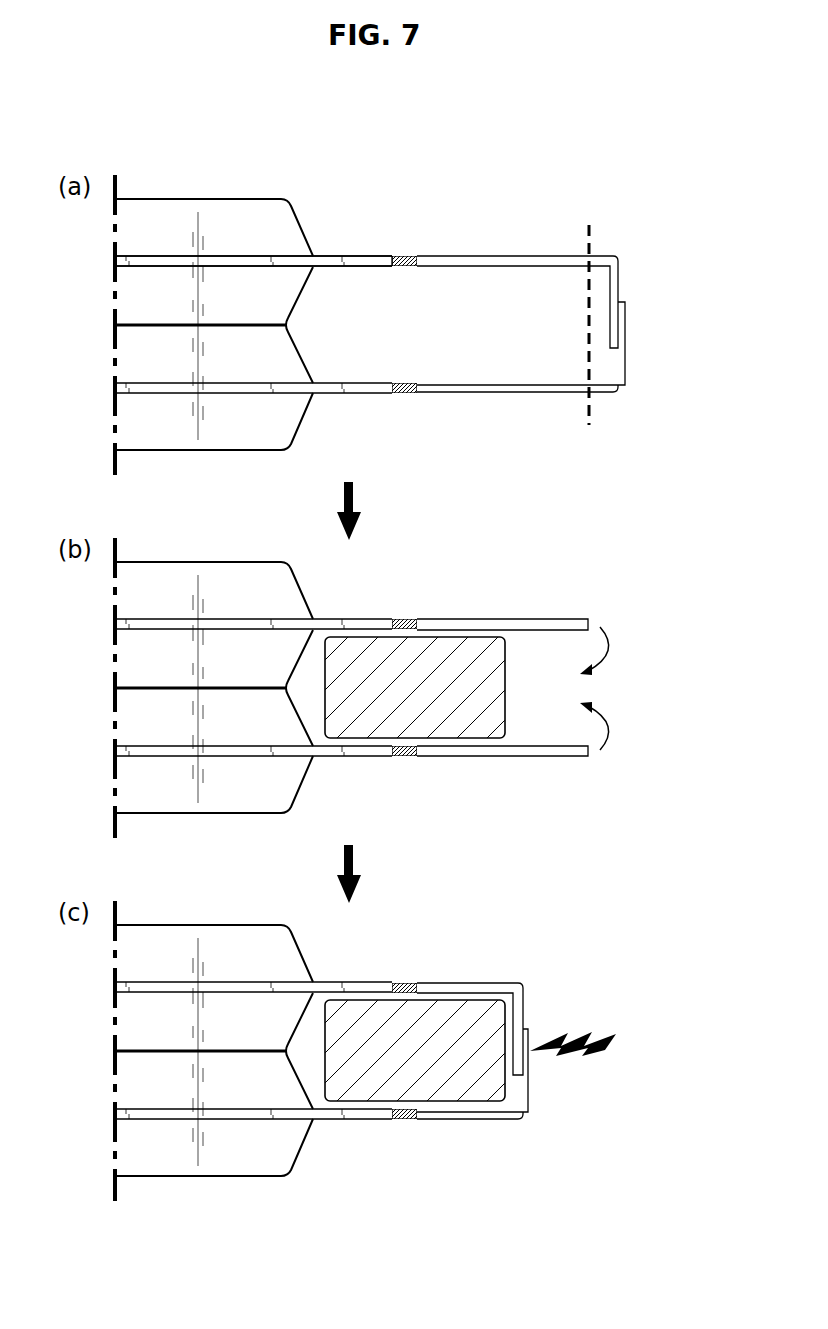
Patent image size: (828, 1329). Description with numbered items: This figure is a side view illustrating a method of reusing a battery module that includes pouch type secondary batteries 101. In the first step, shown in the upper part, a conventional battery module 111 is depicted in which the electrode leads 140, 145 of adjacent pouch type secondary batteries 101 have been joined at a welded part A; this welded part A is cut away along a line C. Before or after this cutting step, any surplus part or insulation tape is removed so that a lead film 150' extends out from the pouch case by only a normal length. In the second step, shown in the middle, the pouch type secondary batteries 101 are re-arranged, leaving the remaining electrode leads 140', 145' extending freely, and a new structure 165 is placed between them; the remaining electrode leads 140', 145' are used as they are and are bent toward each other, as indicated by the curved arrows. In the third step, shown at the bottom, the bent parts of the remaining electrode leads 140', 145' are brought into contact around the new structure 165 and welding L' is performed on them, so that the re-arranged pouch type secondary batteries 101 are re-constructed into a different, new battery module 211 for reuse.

The pouch type secondary battery 101 is at (160, 178).
The battery module 111 is at (431, 177).
The electrode lead 140 is at (517, 282).
The electrode lead 145 is at (517, 410).
The lead film 150' is at (406, 687).
The new structure 165 is at (453, 646).
The remaining electrode lead 140' is at (502, 604).
The remaining electrode lead 145' is at (502, 772).
The new battery module 211 is at (431, 932).
The welded part A is at (636, 331).
The cutting line C is at (589, 338).
The welding L' is at (590, 1037).